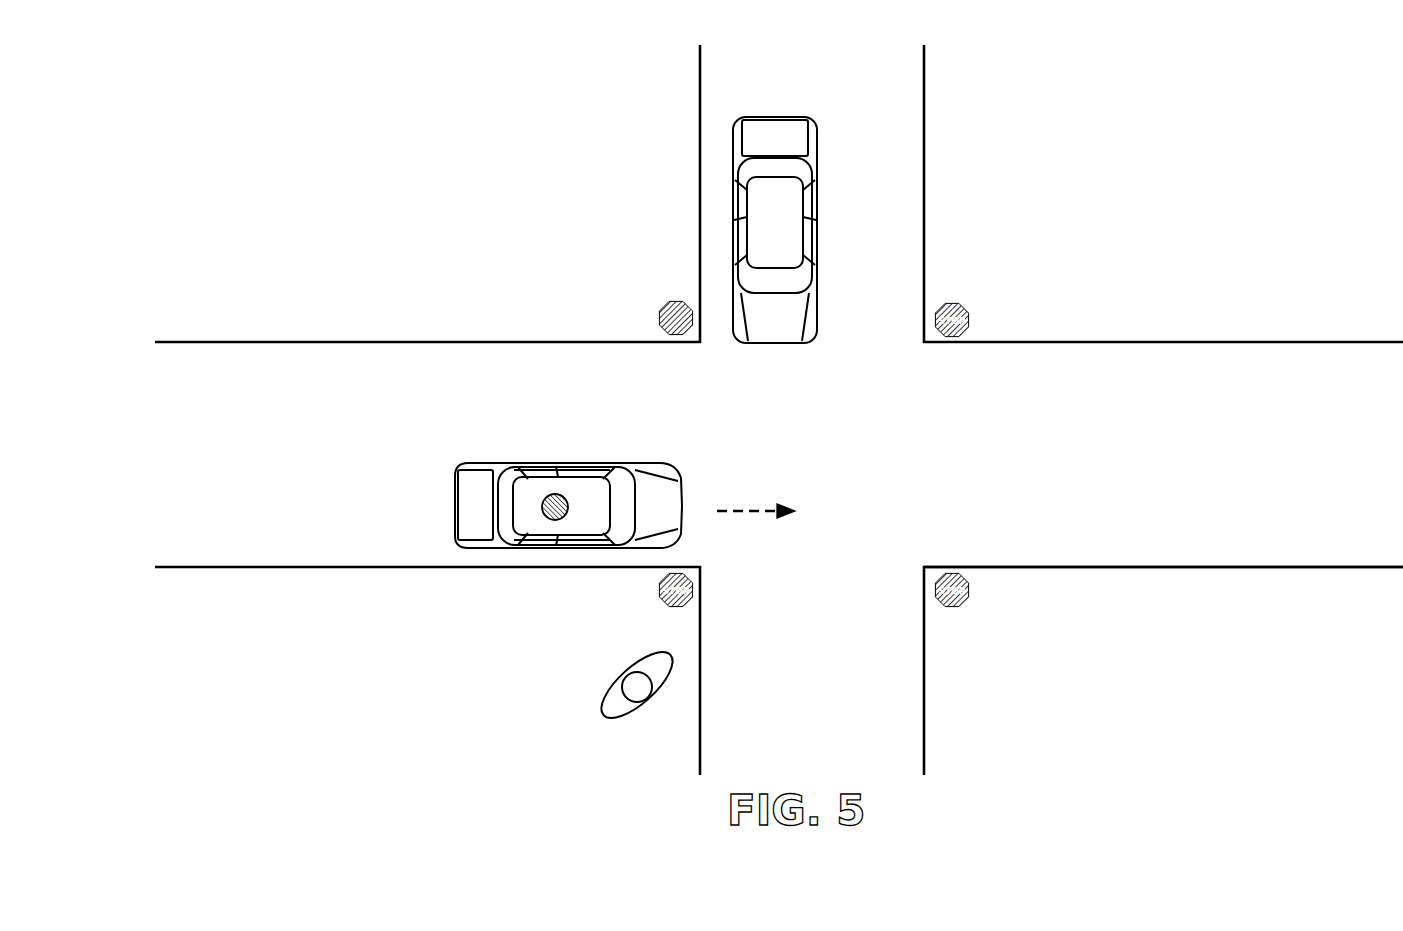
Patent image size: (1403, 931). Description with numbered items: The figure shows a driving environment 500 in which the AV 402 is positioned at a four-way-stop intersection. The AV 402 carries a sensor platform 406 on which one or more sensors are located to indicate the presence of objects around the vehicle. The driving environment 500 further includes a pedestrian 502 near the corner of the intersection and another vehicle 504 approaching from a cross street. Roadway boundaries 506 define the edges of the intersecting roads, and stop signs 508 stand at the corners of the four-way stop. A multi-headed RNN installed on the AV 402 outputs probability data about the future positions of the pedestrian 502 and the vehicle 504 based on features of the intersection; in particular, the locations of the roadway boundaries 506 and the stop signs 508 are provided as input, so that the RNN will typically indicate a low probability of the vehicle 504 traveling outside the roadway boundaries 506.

The driving environment 500 is at (429, 85).
The autonomous vehicle 402 is at (482, 463).
The sensor platform 406 is at (558, 518).
The pedestrian 502 is at (607, 695).
The vehicle 504 is at (775, 115).
The roadway boundaries 506 is at (1095, 566).
The stop signs 508 is at (660, 315).